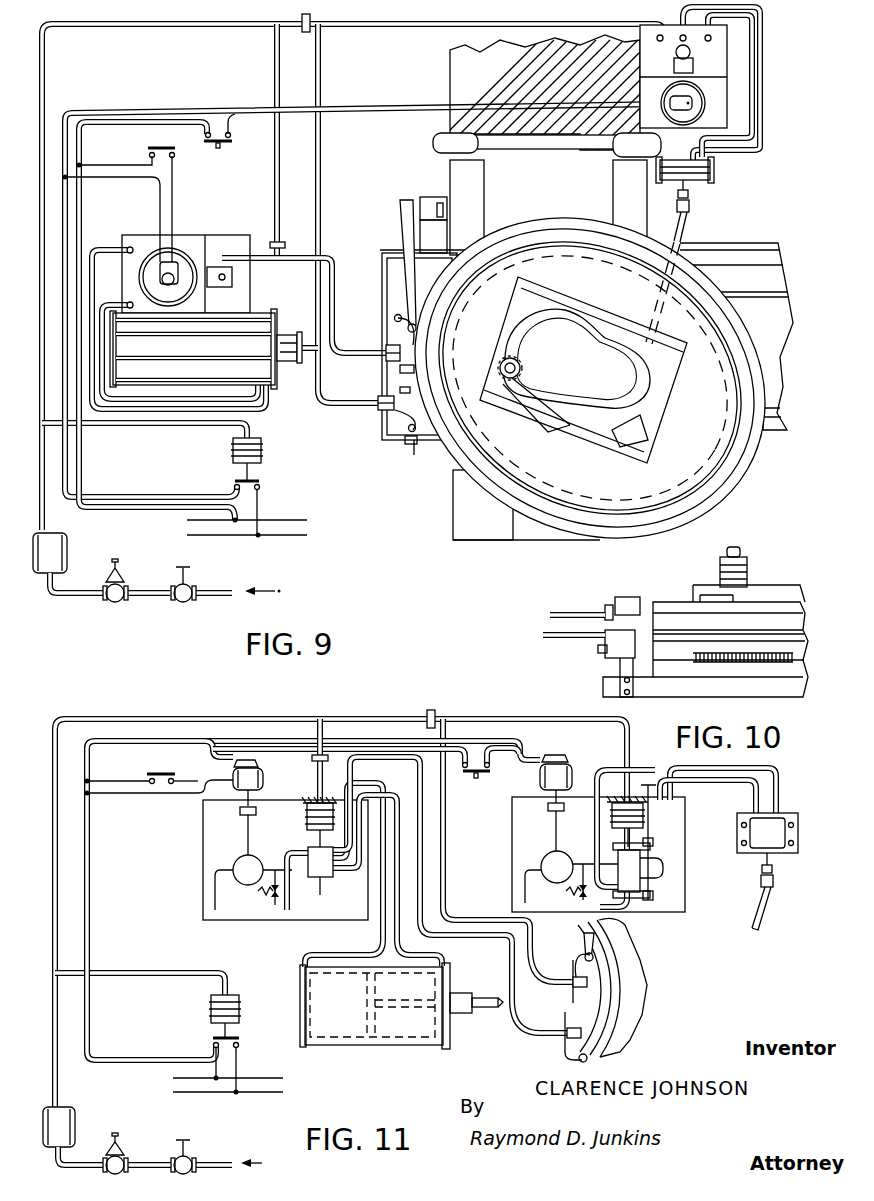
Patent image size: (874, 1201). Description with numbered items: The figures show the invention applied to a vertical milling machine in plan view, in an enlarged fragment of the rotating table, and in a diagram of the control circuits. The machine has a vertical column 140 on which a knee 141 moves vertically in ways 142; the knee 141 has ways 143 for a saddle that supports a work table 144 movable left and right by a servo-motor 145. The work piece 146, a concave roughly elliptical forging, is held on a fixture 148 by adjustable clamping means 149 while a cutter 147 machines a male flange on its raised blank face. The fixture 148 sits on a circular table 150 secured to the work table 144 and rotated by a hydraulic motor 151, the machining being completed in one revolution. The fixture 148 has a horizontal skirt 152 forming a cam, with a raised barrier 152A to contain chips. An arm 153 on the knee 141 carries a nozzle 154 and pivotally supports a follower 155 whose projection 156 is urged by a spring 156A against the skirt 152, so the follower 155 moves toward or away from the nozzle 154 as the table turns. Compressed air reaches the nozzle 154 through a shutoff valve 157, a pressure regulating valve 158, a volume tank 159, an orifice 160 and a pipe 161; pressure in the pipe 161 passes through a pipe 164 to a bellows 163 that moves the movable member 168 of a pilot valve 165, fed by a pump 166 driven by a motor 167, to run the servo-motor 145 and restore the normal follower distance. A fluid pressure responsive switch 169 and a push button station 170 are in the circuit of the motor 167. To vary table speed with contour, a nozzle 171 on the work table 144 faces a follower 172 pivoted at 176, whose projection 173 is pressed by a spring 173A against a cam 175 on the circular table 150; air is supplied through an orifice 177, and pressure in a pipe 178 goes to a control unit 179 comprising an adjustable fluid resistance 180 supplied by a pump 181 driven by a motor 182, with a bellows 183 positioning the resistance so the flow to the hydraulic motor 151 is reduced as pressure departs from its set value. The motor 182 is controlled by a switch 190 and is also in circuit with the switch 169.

In FIG. 9, the vertical column 140 is at (450, 75).
In FIG. 9, the knee 141 is at (458, 166).
In FIG. 9, the ways 142 is at (438, 147).
In FIG. 9, the ways 143 is at (484, 210).
In FIG. 9, the work table 144 is at (731, 243).
In FIG. 9, the servo-motor 145 is at (300, 300).
In FIG. 11, the servo-motor 145 is at (503, 1048).
In FIG. 9, the work piece 146 is at (567, 420).
In FIG. 9, the cutter 147 is at (522, 370).
In FIG. 10, the cutter 147 is at (746, 571).
In FIG. 9, the fixture 148 is at (658, 420).
In FIG. 9, the adjustable clamping means 149 is at (650, 375).
In FIG. 9, the circular table 150 is at (590, 470).
In FIG. 10, the circular table 150 is at (693, 653).
In FIG. 9, the hydraulic motor 151 is at (714, 172).
In FIG. 11, the hydraulic motor 151 is at (740, 820).
In FIG. 9, the skirt 152 is at (715, 497).
In FIG. 10, the skirt 152 is at (648, 627).
In FIG. 9, the raised barrier 152A is at (652, 497).
In FIG. 10, the raised barrier 152A is at (678, 600).
In FIG. 9, the arm 153 is at (402, 205).
In FIG. 10, the arm 153 is at (617, 595).
In FIG. 11, the arm 153 is at (584, 948).
In FIG. 9, the nozzle 154 is at (386, 362).
In FIG. 10, the nozzle 154 is at (610, 617).
In FIG. 11, the nozzle 154 is at (573, 982).
In FIG. 9, the follower 155 is at (402, 340).
In FIG. 11, the follower 155 is at (585, 968).
In FIG. 9, the projection 156 is at (400, 378).
In FIG. 11, the projection 156 is at (598, 1008).
In FIG. 9, the spring 156A is at (397, 314).
In FIG. 9, the shutoff valve 157 is at (183, 603).
In FIG. 11, the shutoff valve 157 is at (186, 1145).
In FIG. 9, the pressure regulating valve 158 is at (113, 604).
In FIG. 11, the pressure regulating valve 158 is at (120, 1140).
In FIG. 9, the volume tank 159 is at (68, 548).
In FIG. 11, the volume tank 159 is at (78, 1120).
In FIG. 9, the orifice 160 is at (272, 241).
In FIG. 11, the orifice 160 is at (312, 758).
In FIG. 9, the pipe 161 is at (328, 255).
In FIG. 10, the pipe 161 is at (550, 611).
In FIG. 11, the pipe 161 is at (507, 937).
In FIG. 11, the bellows 163 is at (307, 817).
In FIG. 11, the pipe 164 is at (322, 752).
In FIG. 11, the pilot valve 165 is at (321, 895).
In FIG. 11, the pump 166 is at (233, 865).
In FIG. 9, the motor 167 is at (178, 250).
In FIG. 11, the motor 167 is at (264, 783).
In FIG. 11, the movable member 168 is at (305, 840).
In FIG. 9, the fluid pressure responsive switch 169 is at (230, 455).
In FIG. 11, the fluid pressure responsive switch 169 is at (210, 1008).
In FIG. 9, the push button station 170 is at (146, 148).
In FIG. 11, the push button station 170 is at (148, 775).
In FIG. 9, the nozzle 171 is at (378, 408).
In FIG. 10, the nozzle 171 is at (604, 647).
In FIG. 9, the follower 172 is at (414, 447).
In FIG. 10, the follower 172 is at (630, 634).
In FIG. 9, the projection 173 is at (400, 390).
In FIG. 9, the spring 173A is at (400, 418).
In FIG. 9, the cam 175 is at (746, 458).
In FIG. 10, the cam 175 is at (657, 627).
In FIG. 9, the pivot 176 is at (405, 440).
In FIG. 9, the orifice 177 is at (306, 33).
In FIG. 11, the orifice 177 is at (430, 712).
In FIG. 9, the pipe 178 is at (345, 26).
In FIG. 11, the pipe 178 is at (164, 718).
In FIG. 9, the control unit 179 is at (806, 63).
In FIG. 11, the control unit 179 is at (493, 849).
In FIG. 11, the adjustable fluid resistance 180 is at (652, 878).
In FIG. 11, the pump 181 is at (553, 855).
In FIG. 11, the motor 182 is at (564, 762).
In FIG. 11, the bellows 183 is at (610, 820).
In FIG. 9, the switch 190 is at (229, 143).
In FIG. 11, the switch 190 is at (487, 778).